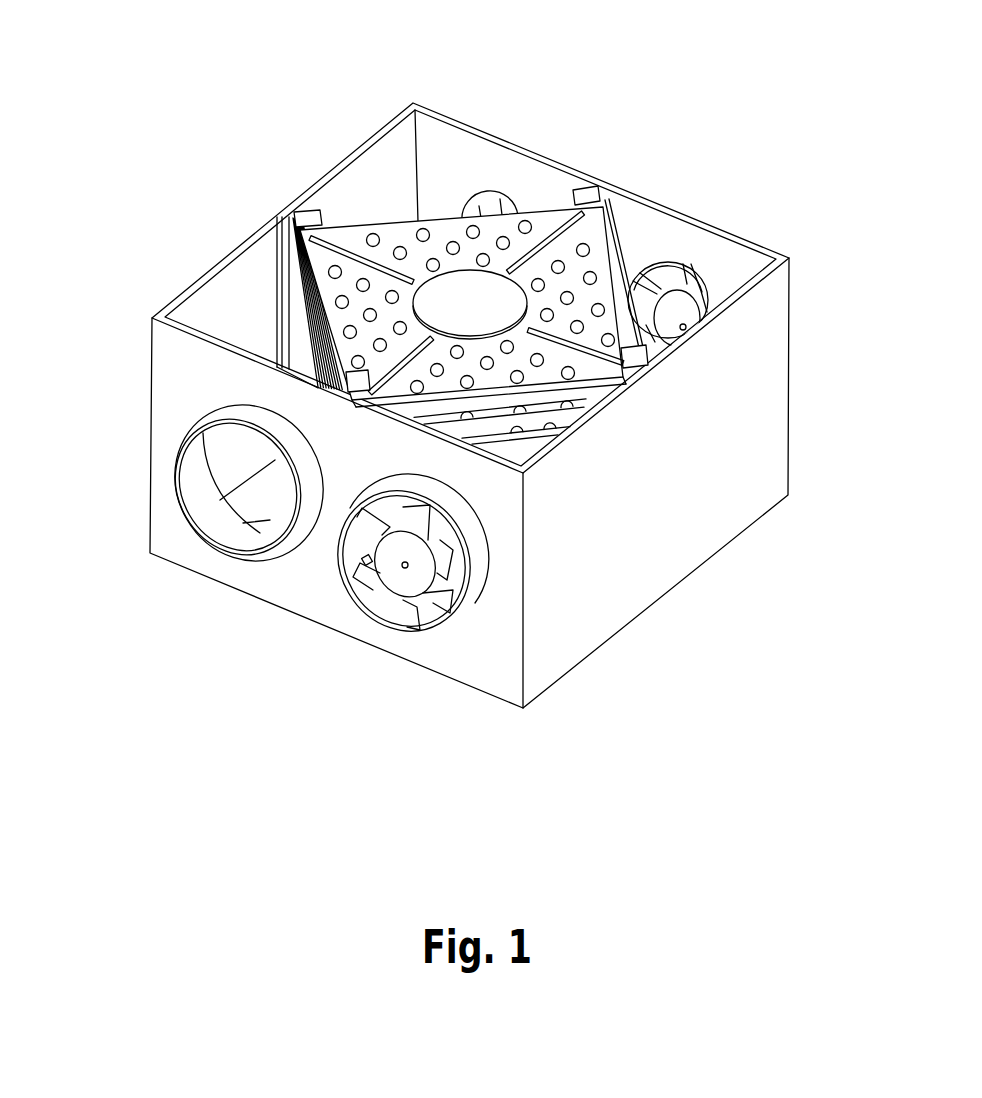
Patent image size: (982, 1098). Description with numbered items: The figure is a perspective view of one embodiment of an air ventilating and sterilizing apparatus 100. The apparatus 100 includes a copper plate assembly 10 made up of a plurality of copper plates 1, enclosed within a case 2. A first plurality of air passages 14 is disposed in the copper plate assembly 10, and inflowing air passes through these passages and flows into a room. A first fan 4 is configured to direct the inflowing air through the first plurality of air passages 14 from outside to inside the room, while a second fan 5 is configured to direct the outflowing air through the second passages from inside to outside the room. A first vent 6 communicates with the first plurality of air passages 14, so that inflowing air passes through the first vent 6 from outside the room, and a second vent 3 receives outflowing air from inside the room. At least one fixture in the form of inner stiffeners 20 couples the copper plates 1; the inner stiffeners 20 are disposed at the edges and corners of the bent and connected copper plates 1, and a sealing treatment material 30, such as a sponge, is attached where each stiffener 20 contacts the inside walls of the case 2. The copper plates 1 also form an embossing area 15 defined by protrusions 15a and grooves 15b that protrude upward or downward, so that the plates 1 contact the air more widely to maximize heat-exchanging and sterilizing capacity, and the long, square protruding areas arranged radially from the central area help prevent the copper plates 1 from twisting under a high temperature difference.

The air ventilating and sterilizing apparatus 100 is at (74, 653).
The copper plate 1 is at (479, 211).
The case 2 is at (657, 603).
The second vent 3 is at (267, 520).
The first fan 4 is at (413, 610).
The second fan 5 is at (690, 268).
The first vent 6 is at (515, 200).
The copper plate assembly 10 is at (300, 318).
The first plurality of air passages 14 is at (549, 417).
The embossing area 15 is at (332, 72).
The protrusions 15a is at (419, 232).
The grooves 15b is at (362, 252).
The inner stiffener 20 is at (577, 200).
The sealing treatment material 30 is at (610, 200).